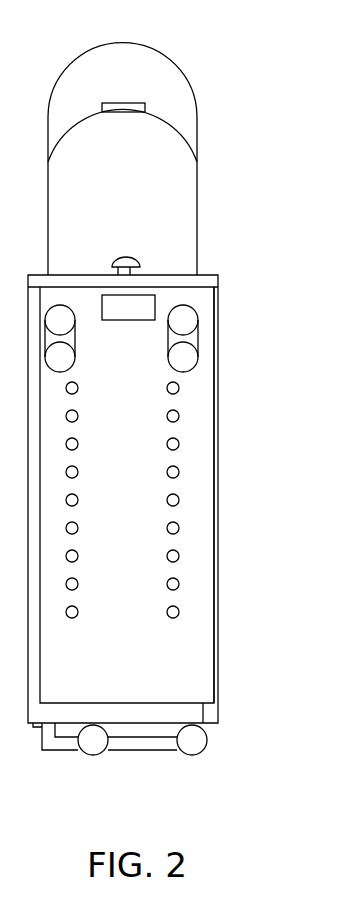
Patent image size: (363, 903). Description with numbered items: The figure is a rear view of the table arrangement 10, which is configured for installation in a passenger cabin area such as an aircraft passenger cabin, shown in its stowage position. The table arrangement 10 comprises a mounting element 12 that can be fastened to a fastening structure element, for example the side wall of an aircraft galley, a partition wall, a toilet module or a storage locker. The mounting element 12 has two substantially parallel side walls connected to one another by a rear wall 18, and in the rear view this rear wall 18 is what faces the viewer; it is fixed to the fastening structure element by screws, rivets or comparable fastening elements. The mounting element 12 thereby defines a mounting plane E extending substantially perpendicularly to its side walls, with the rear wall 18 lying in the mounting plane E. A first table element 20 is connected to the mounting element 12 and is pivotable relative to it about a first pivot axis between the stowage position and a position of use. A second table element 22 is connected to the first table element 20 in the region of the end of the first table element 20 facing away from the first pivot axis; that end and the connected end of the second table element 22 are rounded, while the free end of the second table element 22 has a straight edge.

The table arrangement 10 is at (215, 93).
The mounting element 12 is at (217, 532).
The rear wall 18 is at (203, 673).
The first table element 20 is at (165, 68).
The second table element 22 is at (188, 208).
The mounting plane E is at (205, 442).